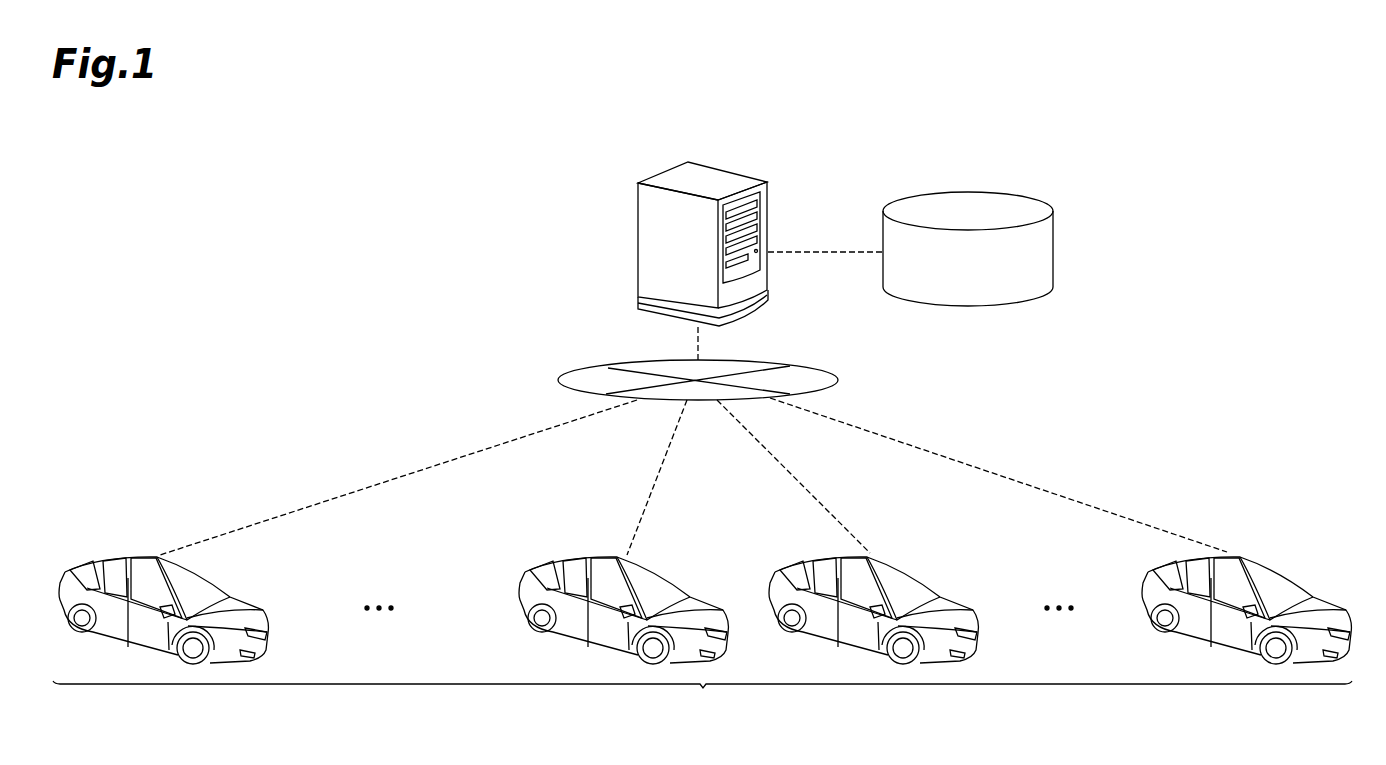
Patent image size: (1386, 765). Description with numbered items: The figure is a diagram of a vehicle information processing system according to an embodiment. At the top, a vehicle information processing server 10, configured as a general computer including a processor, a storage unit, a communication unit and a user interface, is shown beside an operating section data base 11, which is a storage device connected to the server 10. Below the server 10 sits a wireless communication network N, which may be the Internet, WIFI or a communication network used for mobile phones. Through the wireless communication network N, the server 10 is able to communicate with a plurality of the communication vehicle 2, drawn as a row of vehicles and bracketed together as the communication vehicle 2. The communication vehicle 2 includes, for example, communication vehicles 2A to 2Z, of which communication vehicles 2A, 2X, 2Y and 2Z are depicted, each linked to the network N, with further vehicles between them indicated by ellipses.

The vehicle information processing server 10 is at (735, 178).
The operating section data base 11 is at (1022, 193).
The wireless communication network N is at (808, 367).
The communication vehicle 2 is at (702, 614).
The communication vehicle 2A is at (140, 553).
The communication vehicle 2X is at (648, 566).
The communication vehicle 2Y is at (885, 562).
The communication vehicle 2Z is at (1262, 562).